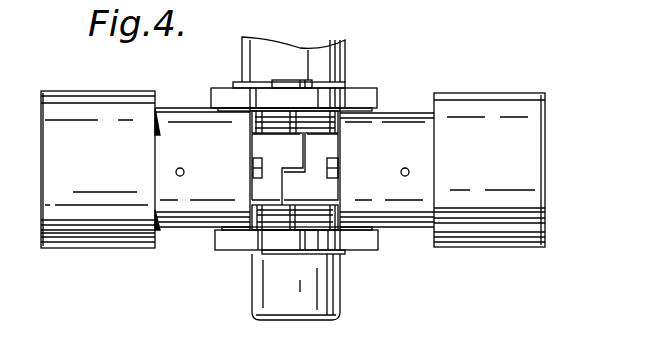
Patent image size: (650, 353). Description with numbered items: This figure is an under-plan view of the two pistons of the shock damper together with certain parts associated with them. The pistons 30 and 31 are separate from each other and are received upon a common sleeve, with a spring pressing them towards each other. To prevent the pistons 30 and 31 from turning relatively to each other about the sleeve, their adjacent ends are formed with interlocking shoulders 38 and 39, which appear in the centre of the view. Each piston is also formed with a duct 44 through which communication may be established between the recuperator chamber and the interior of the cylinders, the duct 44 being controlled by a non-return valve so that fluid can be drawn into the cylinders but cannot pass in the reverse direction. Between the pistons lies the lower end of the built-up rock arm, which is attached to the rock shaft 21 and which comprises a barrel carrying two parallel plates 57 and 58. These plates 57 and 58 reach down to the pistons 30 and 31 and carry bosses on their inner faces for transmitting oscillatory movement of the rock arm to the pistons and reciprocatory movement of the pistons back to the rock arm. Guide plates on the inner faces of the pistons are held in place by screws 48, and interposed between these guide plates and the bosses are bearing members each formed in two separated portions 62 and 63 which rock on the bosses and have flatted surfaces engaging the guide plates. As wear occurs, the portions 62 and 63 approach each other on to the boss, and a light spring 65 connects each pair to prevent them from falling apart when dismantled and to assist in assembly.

The rock shaft 21 is at (303, 52).
The piston 30 is at (92, 247).
The piston 31 is at (527, 242).
The interlocking shoulder 38 is at (290, 156).
The interlocking shoulder 39 is at (302, 187).
The duct 44 is at (180, 176).
The screw 48 is at (260, 168).
The plate 57 is at (343, 227).
The plate 58 is at (342, 100).
The bearing member portion 62 is at (250, 108).
The bearing member portion 63 is at (350, 118).
The light spring 65 is at (340, 117).